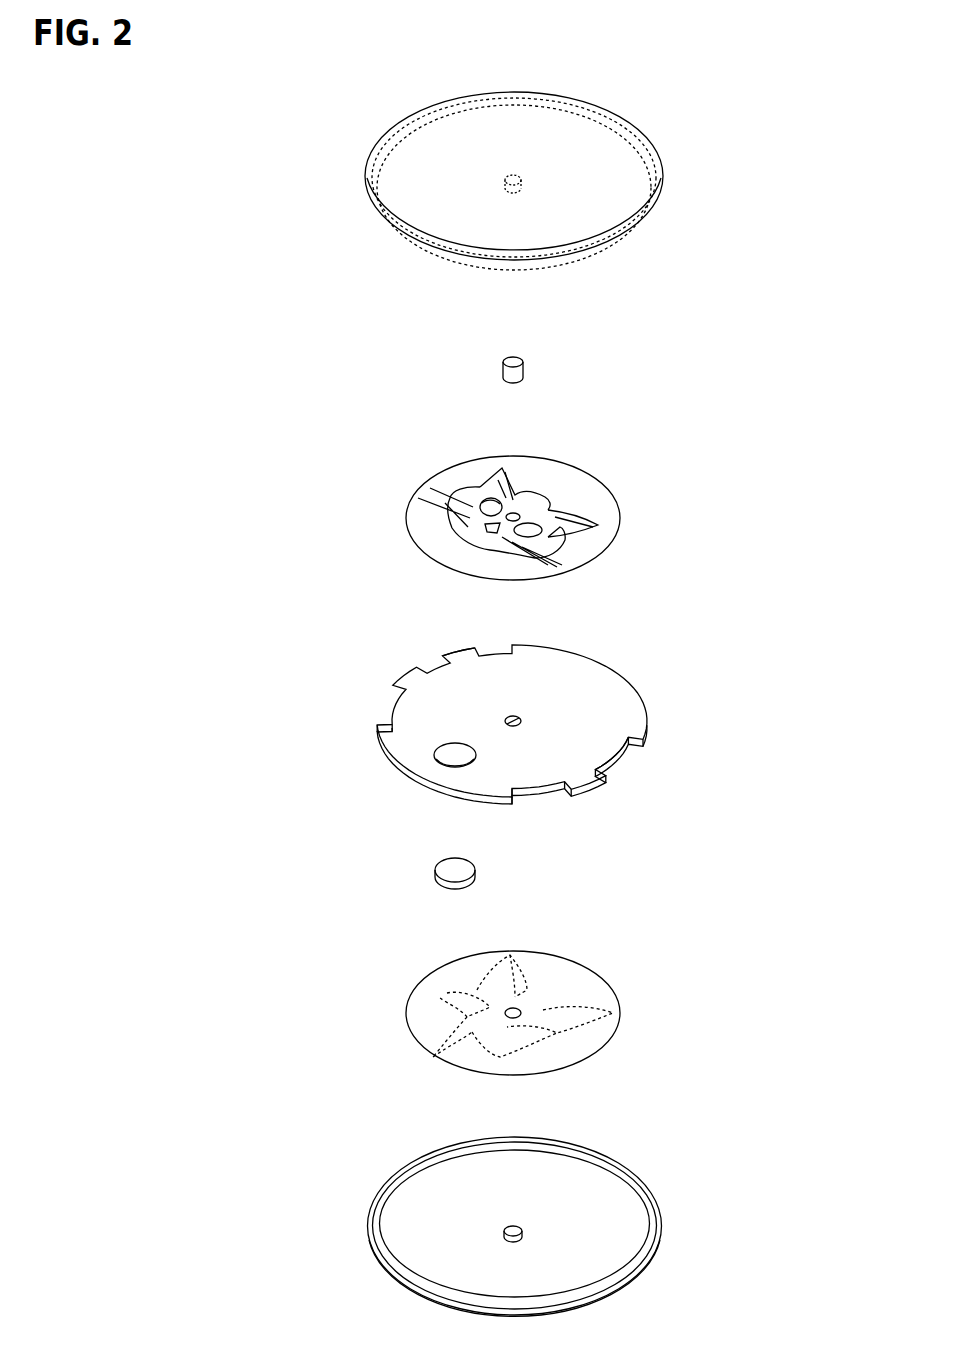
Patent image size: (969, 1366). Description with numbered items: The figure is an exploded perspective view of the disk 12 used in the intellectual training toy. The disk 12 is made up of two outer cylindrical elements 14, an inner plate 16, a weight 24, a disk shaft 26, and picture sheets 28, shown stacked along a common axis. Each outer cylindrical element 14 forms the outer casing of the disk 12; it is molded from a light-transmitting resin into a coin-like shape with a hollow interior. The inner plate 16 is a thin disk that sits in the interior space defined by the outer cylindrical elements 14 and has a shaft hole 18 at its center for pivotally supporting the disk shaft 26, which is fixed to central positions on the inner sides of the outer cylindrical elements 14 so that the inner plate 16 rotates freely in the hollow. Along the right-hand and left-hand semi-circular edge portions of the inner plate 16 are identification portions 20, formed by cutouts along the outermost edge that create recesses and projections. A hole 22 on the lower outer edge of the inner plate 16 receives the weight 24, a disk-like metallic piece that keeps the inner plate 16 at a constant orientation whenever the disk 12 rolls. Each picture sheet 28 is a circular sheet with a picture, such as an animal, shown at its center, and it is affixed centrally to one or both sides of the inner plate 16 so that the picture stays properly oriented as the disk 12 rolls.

The disk 12 is at (289, 276).
The outer cylindrical element 14 is at (585, 178).
The inner plate 16 is at (588, 705).
The shaft hole 18 is at (518, 715).
The identification portion 20 is at (437, 665).
The hole 22 is at (455, 755).
The weight 24 is at (455, 872).
The disk shaft 26 is at (523, 368).
The picture sheet 28 is at (582, 494).